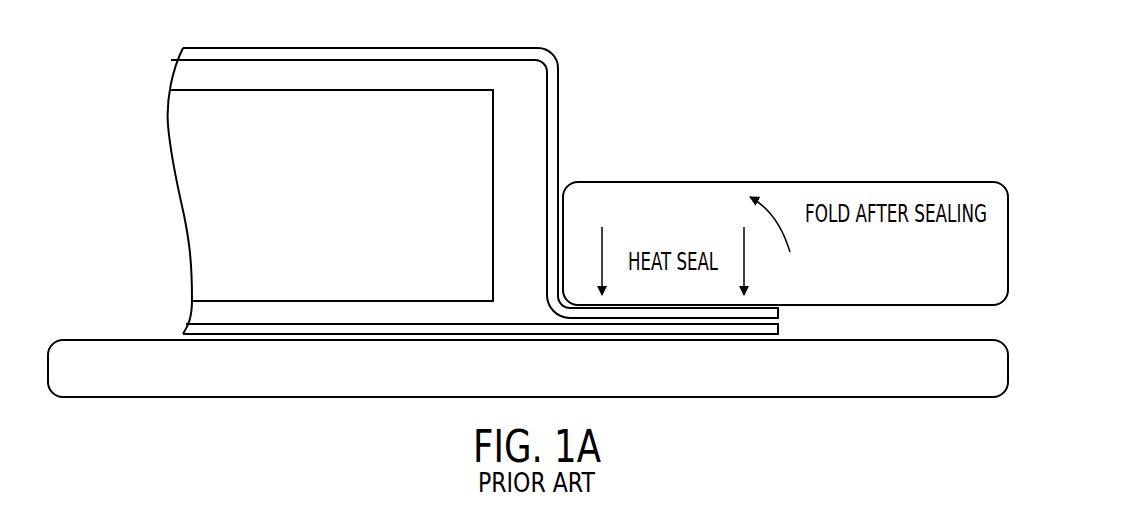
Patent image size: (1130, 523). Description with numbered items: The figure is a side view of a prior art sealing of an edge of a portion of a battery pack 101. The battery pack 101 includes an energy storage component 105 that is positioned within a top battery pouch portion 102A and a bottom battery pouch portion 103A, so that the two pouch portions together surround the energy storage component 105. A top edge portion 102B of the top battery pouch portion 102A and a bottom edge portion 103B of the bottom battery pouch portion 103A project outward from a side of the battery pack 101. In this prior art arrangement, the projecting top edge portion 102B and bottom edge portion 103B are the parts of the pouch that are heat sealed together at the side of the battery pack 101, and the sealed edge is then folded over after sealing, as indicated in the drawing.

The battery pack 101 is at (1044, 340).
The top battery pouch portion 102A is at (558, 125).
The top edge portion 102B is at (755, 307).
The bottom battery pouch portion 103A is at (445, 335).
The bottom edge portion 103B is at (717, 335).
The energy storage component 105 is at (383, 88).